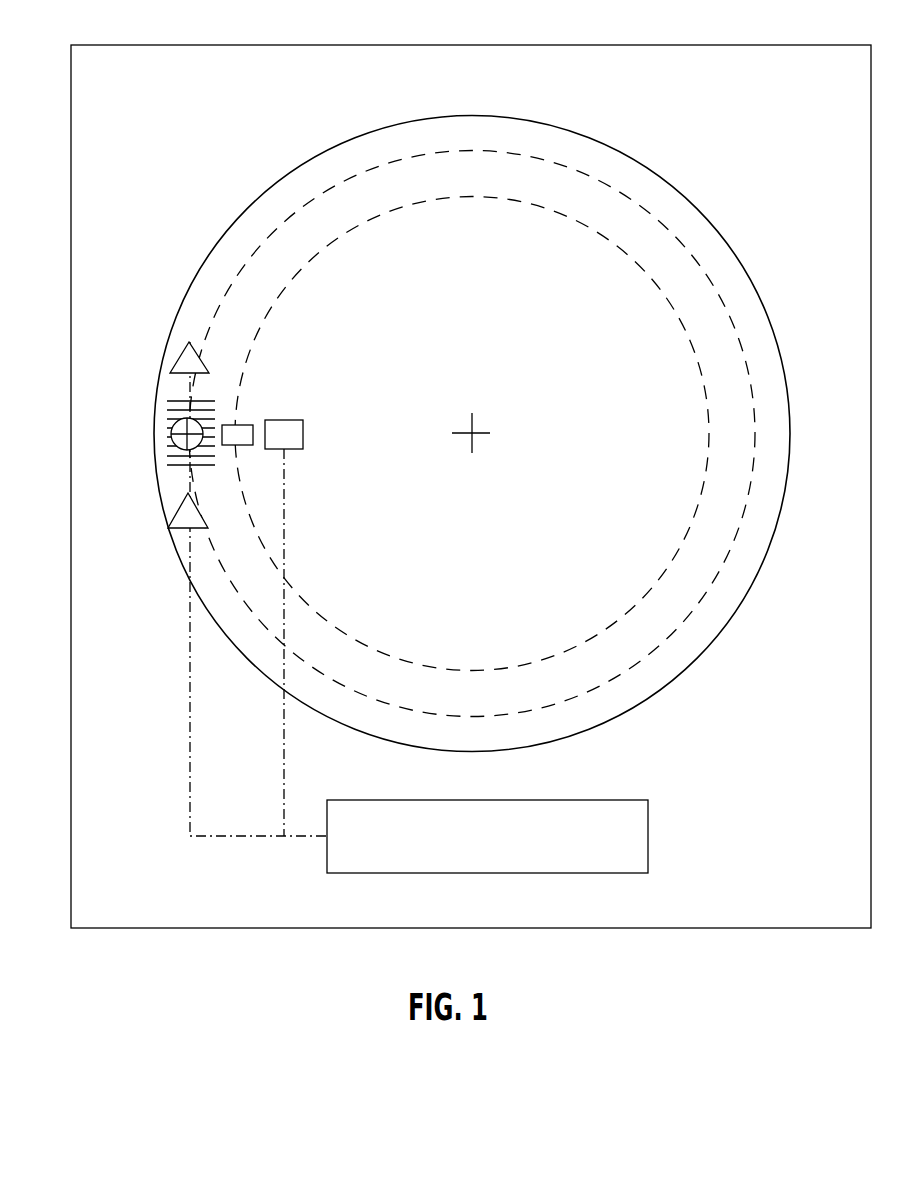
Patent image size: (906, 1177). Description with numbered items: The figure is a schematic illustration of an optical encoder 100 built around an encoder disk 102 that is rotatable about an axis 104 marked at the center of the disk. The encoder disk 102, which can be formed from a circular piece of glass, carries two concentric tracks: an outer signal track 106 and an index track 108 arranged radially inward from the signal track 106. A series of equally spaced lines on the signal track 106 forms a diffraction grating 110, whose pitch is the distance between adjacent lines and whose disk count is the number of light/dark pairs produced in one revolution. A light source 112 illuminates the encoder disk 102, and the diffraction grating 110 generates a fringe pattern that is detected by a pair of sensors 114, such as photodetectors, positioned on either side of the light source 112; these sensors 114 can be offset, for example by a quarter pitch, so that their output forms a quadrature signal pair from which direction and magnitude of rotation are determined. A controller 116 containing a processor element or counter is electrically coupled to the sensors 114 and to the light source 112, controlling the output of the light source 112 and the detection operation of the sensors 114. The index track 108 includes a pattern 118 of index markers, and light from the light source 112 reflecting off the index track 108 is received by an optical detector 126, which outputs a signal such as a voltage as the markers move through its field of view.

The optical encoder 100 is at (112, 44).
The encoder disk 102 is at (617, 152).
The axis 104 is at (476, 428).
The signal track 106 is at (285, 220).
The index track 108 is at (318, 250).
The diffraction grating 110 is at (117, 392).
The light source 112 is at (171, 436).
The sensors 114 is at (180, 360).
The controller 116 is at (617, 800).
The pattern 118 is at (245, 425).
The optical detector 126 is at (293, 420).